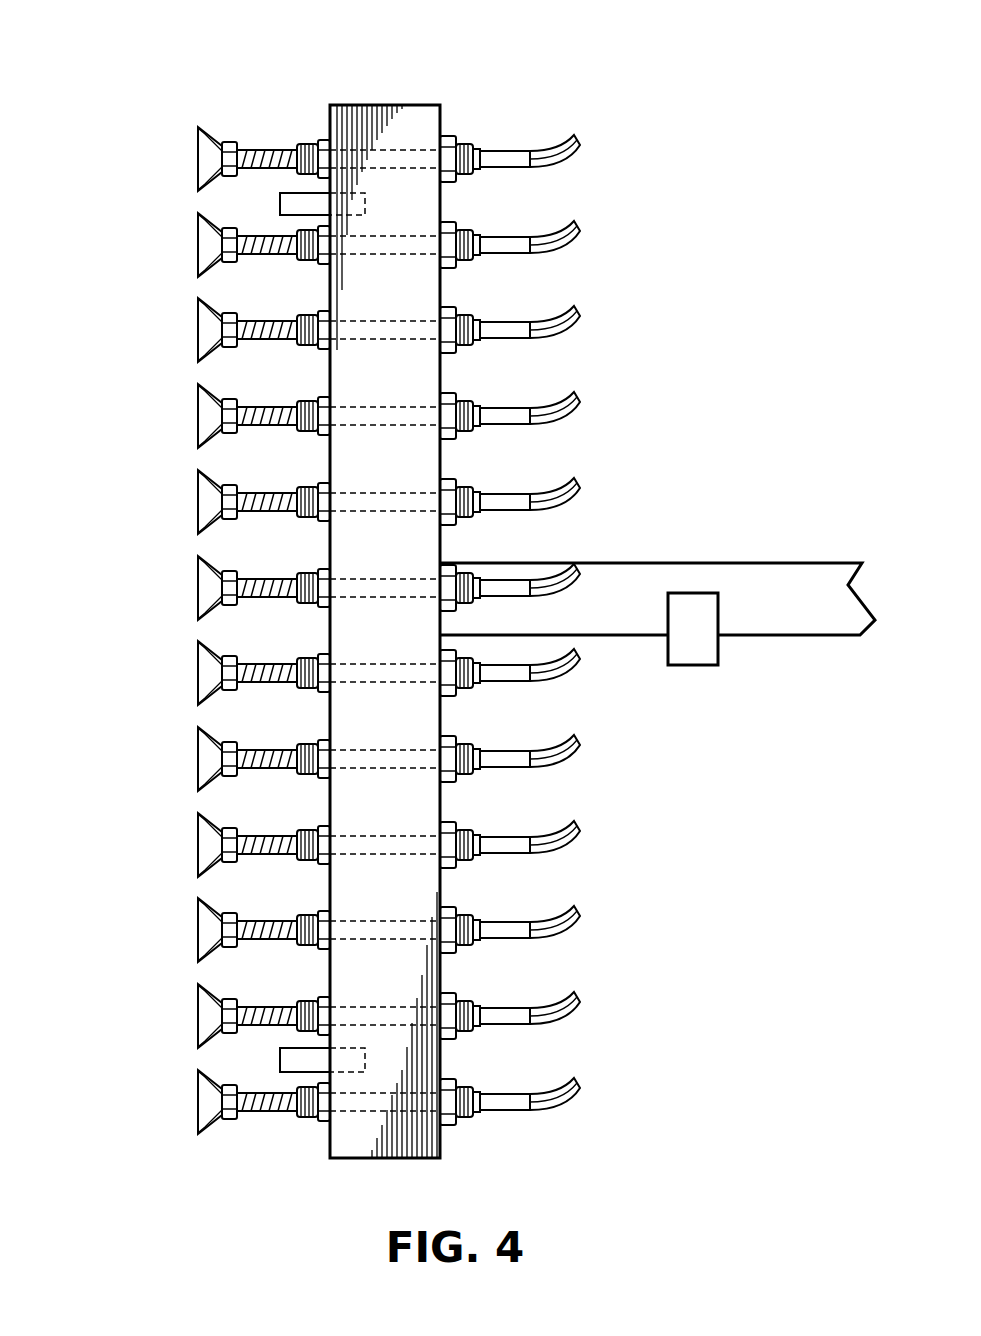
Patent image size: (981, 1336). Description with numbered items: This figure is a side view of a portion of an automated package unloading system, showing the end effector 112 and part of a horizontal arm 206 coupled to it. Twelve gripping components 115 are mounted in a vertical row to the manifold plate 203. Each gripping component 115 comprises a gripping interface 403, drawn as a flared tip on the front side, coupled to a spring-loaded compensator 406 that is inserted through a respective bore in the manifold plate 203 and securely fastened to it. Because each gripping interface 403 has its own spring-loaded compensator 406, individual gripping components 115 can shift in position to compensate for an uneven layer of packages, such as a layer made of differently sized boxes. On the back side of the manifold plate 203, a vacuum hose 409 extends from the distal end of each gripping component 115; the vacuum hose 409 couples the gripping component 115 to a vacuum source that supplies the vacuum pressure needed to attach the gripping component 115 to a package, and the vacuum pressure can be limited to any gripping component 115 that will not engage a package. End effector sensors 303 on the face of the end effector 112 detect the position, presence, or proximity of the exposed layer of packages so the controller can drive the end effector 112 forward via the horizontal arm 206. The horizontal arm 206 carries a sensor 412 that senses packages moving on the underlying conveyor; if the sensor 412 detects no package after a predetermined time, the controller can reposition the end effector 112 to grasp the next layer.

The end effector 112 is at (114, 420).
The gripping component 115 is at (186, 160).
The manifold plate 203 is at (417, 135).
The horizontal arm 206 is at (817, 620).
The end effector sensor 303 is at (280, 1062).
The gripping interface 403 is at (207, 130).
The spring-loaded compensator 406 is at (298, 144).
The vacuum hose 409 is at (565, 162).
The sensor 412 is at (692, 667).